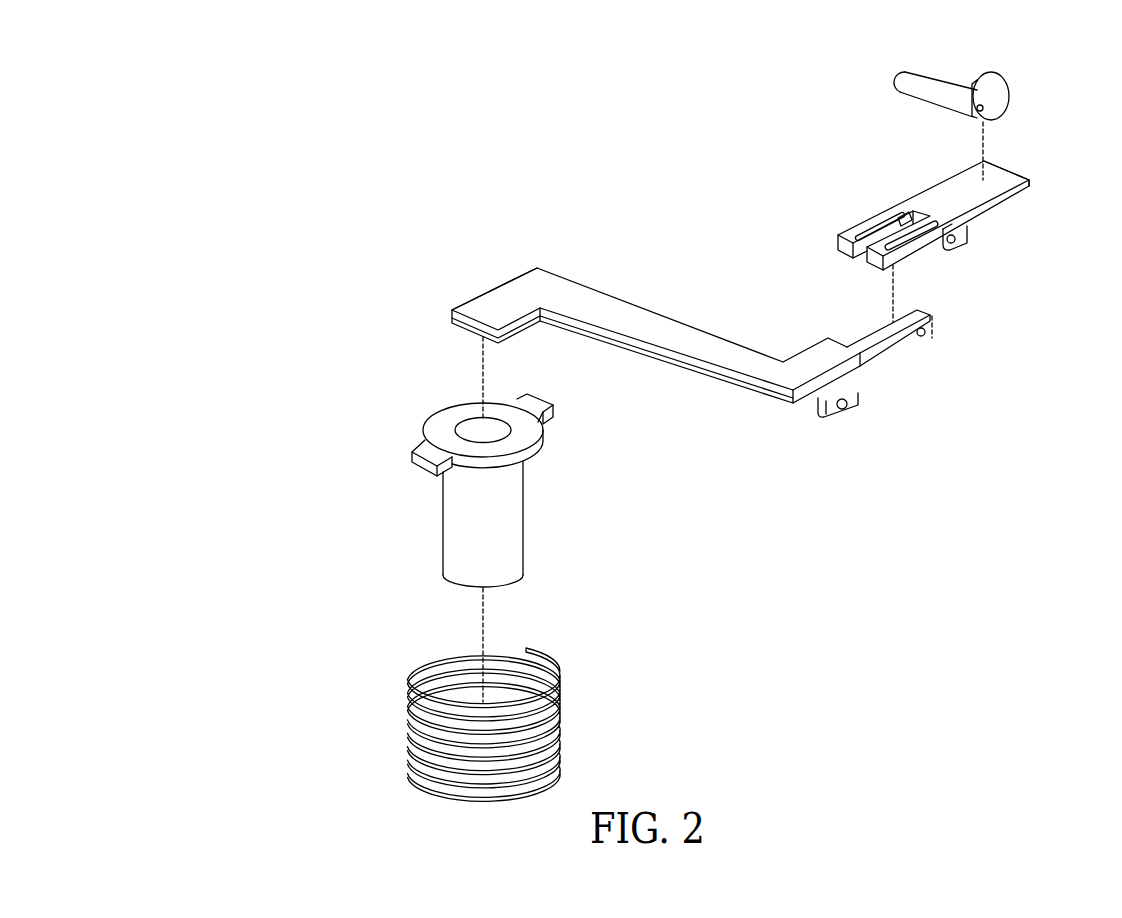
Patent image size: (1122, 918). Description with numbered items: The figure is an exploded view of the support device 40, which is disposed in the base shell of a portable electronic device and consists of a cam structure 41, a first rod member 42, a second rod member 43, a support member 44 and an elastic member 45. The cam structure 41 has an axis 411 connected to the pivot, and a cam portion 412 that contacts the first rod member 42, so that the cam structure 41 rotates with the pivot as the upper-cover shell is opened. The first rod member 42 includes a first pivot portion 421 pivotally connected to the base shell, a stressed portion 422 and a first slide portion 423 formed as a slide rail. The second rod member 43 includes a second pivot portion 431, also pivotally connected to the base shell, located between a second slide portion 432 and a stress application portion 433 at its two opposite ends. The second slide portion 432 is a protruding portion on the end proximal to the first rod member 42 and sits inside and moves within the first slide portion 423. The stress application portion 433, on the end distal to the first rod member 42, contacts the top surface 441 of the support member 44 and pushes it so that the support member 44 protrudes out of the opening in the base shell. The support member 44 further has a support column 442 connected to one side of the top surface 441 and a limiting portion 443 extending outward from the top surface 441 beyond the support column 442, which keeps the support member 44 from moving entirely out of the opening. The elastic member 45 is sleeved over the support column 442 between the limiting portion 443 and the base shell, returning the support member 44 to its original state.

The support device 40 is at (298, 140).
The cam structure 41 is at (922, 78).
The axis 411 is at (948, 92).
The cam portion 412 is at (994, 97).
The first rod member 42 is at (940, 190).
The first pivot portion 421 is at (963, 247).
The stressed portion 422 is at (1003, 178).
The first slide portion 423 is at (877, 232).
The second rod member 43 is at (640, 307).
The second pivot portion 431 is at (855, 400).
The second slide portion 432 is at (925, 336).
The stress application portion 433 is at (503, 300).
The support member 44 is at (518, 502).
The top surface 441 is at (440, 423).
The support column 442 is at (462, 530).
The limiting portion 443 is at (545, 405).
The elastic member 45 is at (560, 706).